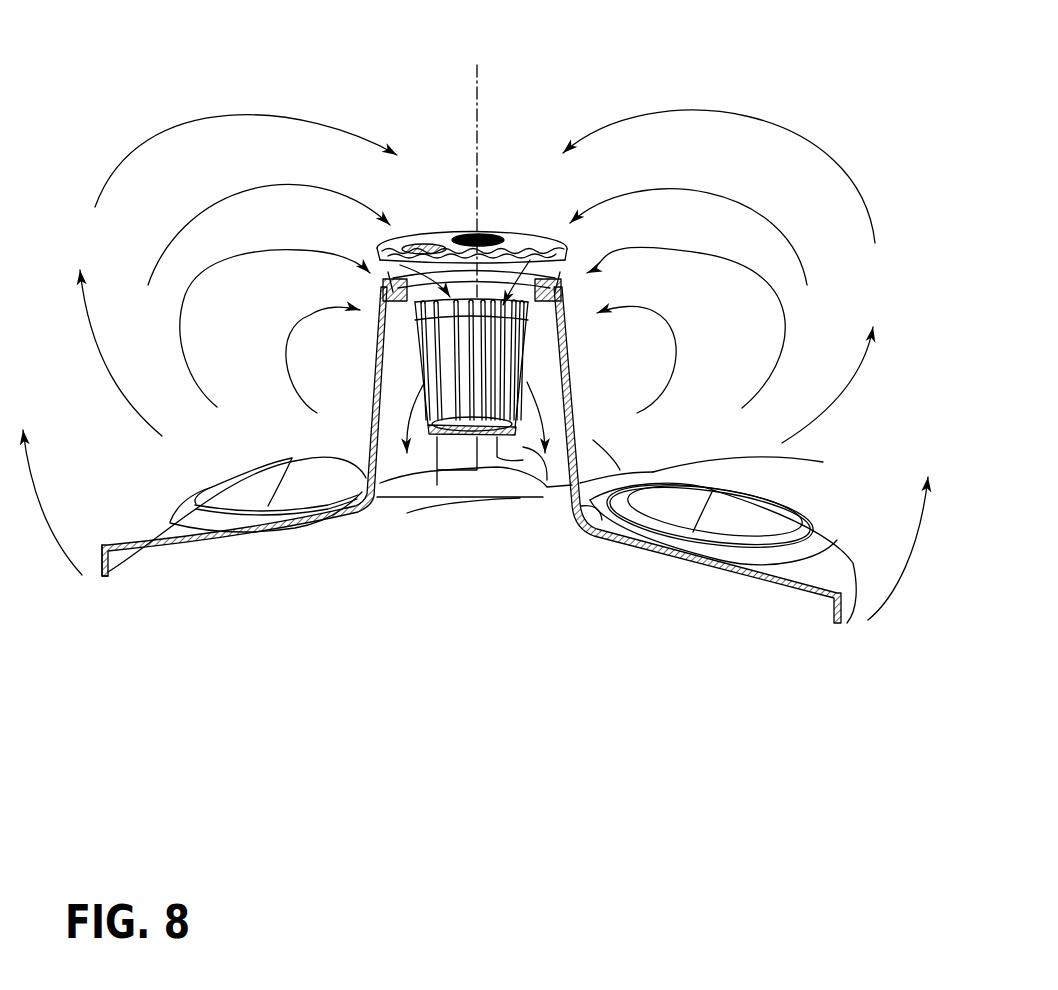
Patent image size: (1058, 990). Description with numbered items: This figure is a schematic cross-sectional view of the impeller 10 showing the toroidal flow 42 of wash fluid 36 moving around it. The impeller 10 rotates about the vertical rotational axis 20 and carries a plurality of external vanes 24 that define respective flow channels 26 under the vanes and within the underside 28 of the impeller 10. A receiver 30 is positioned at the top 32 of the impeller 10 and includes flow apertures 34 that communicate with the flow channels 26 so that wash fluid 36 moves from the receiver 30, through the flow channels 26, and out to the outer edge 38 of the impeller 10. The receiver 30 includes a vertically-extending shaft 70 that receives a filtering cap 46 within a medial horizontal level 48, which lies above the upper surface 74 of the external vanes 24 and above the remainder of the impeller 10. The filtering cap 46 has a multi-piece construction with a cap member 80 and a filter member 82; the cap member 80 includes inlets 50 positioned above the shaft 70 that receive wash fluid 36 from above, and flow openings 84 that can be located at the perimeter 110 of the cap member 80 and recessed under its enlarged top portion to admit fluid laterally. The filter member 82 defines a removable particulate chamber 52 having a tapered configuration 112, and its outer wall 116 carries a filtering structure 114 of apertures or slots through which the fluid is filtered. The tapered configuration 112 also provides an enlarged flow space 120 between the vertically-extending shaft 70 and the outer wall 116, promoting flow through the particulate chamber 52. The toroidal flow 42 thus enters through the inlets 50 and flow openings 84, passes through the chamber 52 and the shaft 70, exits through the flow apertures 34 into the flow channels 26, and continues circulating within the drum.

The impeller 10 is at (117, 488).
The vertical rotational axis 20 is at (477, 115).
The external vanes 24 is at (597, 466).
The flow channels 26 is at (518, 477).
The underside 28 is at (272, 532).
The receiver 30 is at (573, 297).
The top 32 is at (380, 288).
The flow apertures 34 is at (523, 447).
The wash fluid 36 is at (760, 110).
The outer edge 38 is at (105, 548).
The toroidal flow 42 is at (207, 118).
The filtering cap 46 is at (450, 223).
The medial horizontal level 48 is at (117, 243).
The inlets 50 is at (500, 233).
The removable particulate chamber 52 is at (440, 358).
The vertically-extending shaft 70 is at (573, 397).
The upper surface 74 is at (838, 474).
The cap member 80 is at (553, 250).
The filter member 82 is at (473, 417).
The flow openings 84 is at (378, 249).
The perimeter 110 is at (530, 243).
The tapered configuration 112 is at (400, 402).
The filtering structure 114 is at (478, 432).
The outer wall 116 is at (528, 353).
The enlarged flow space 120 is at (385, 433).